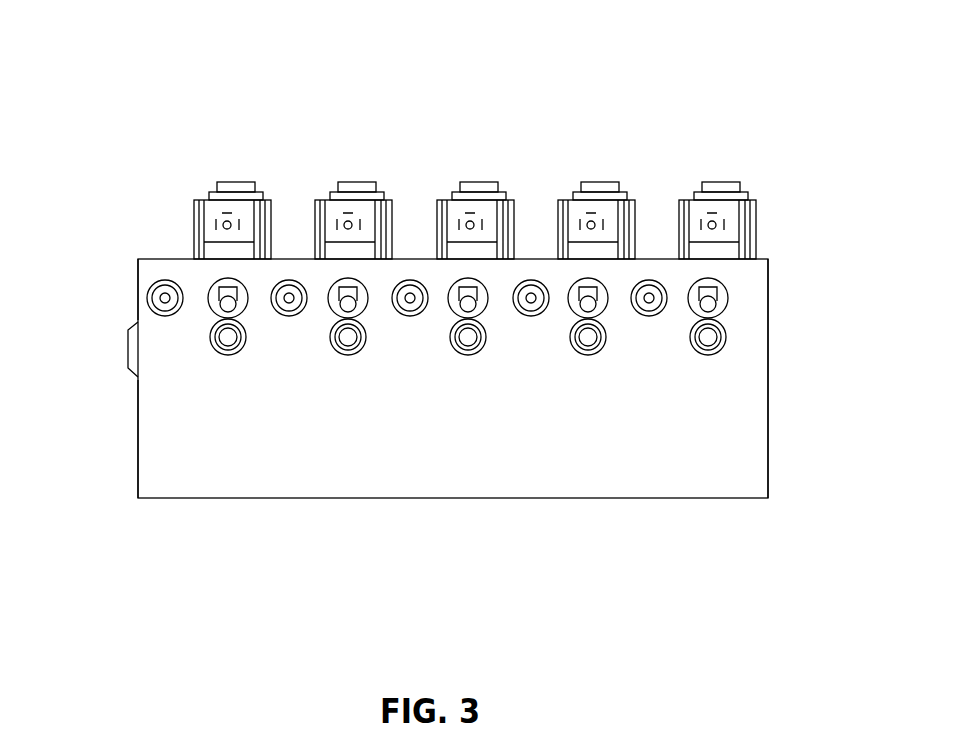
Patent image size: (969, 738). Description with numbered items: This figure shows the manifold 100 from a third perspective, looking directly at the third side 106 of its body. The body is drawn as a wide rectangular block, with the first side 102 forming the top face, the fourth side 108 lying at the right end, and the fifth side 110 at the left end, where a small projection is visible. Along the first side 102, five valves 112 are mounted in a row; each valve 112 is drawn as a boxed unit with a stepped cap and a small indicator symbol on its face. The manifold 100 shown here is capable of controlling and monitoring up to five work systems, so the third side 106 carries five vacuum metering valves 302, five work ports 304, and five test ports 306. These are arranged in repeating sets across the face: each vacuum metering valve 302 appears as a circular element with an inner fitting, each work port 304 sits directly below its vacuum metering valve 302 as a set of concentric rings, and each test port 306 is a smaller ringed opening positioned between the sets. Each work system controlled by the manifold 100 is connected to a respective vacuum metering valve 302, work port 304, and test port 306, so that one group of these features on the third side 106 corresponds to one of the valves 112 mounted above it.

The manifold 100 is at (363, 65).
The first side 102 is at (665, 257).
The third side 106 is at (161, 410).
The fourth side 108 is at (769, 327).
The fifth side 110 is at (139, 289).
The valves 112 is at (213, 181).
The vacuum metering valve 302 is at (211, 310).
The work port 304 is at (229, 358).
The test port 306 is at (165, 280).